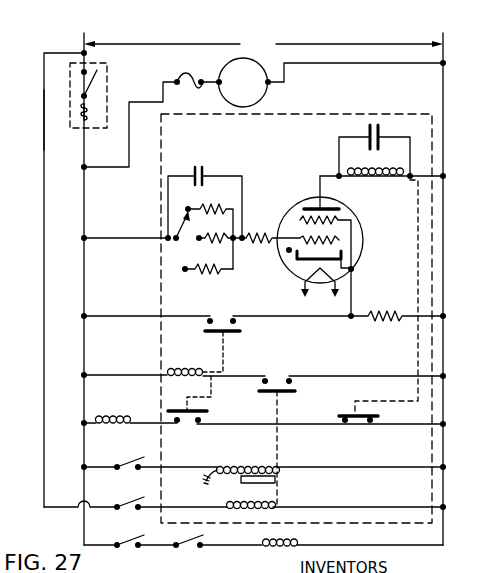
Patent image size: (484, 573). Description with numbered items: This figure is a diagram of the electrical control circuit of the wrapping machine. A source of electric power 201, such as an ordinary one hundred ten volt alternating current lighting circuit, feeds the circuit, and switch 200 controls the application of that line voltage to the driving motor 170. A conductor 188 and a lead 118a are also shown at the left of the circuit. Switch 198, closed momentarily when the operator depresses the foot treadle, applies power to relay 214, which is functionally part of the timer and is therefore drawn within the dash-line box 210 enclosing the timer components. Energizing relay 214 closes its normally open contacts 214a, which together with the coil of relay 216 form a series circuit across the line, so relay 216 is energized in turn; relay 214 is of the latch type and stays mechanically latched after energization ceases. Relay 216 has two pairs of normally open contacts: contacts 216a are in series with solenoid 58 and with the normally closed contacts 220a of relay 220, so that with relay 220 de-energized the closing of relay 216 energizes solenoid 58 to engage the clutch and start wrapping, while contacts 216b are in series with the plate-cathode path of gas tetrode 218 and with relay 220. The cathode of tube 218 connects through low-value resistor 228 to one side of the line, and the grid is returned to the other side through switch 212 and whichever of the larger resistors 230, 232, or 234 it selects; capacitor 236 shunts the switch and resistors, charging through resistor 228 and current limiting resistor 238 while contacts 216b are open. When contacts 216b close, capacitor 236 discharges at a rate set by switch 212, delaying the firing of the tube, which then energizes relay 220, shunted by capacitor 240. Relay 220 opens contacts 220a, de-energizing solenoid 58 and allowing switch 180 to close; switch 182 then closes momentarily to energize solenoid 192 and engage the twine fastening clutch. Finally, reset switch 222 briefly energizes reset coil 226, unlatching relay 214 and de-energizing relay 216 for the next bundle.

The source of electric power 201 is at (263, 47).
The driving motor 170 is at (223, 68).
The switch 200 is at (107, 80).
The conductor 188 is at (22, 120).
The conductor 118a is at (84, 240).
The timer 210 is at (347, 108).
The capacitor 240 is at (380, 128).
The relay 220 is at (362, 177).
The normally closed contacts 220a is at (358, 420).
The gas tetrode 218 is at (360, 231).
The capacitor 236 is at (203, 170).
The resistor 230 is at (200, 206).
The resistor 232 is at (218, 236).
The current limiting resistor 238 is at (262, 237).
The resistor 234 is at (231, 266).
The switch 212 is at (176, 233).
The resistor 228 is at (372, 312).
The normally open contacts 216b is at (222, 316).
The relay 216 is at (175, 366).
The normally open contacts 216a is at (205, 411).
The normally open contacts 214a is at (273, 382).
The solenoid 58 is at (105, 417).
The switch 198 is at (128, 462).
The relay 214 is at (257, 466).
The reset switch 222 is at (130, 500).
The reset coil 226 is at (232, 505).
The switch 182 is at (132, 541).
The switch 180 is at (191, 541).
The solenoid 192 is at (268, 550).